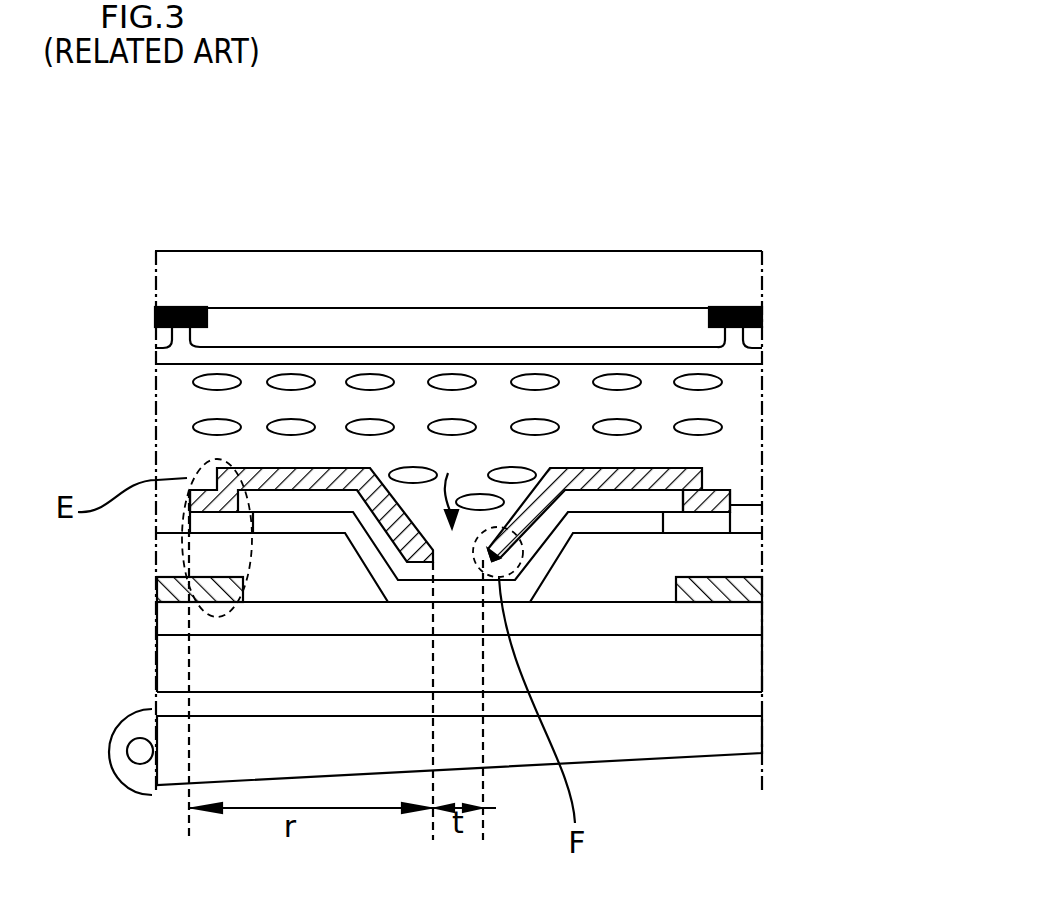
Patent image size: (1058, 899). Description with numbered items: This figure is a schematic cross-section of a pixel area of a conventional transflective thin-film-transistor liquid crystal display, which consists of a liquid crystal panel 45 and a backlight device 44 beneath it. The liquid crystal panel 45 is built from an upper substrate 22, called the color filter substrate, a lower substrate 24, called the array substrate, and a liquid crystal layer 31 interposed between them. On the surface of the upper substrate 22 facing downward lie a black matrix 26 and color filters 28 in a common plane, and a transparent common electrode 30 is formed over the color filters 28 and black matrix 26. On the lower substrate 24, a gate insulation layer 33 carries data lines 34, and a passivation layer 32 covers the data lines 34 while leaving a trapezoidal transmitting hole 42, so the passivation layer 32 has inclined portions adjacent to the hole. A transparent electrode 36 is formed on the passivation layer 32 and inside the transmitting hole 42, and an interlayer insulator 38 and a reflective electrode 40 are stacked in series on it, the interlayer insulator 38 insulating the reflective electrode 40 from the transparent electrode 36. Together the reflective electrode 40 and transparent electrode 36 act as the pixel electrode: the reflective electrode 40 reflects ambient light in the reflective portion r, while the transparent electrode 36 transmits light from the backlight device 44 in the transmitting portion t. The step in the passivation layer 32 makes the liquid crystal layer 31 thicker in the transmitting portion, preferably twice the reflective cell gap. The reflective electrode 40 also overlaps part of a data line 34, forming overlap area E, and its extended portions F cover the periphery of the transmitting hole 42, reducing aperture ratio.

The upper substrate 22 is at (458, 279).
The lower substrate 24 is at (458, 700).
The black matrix 26 is at (183, 306).
The color filters 28 is at (262, 330).
The transparent common electrode 30 is at (168, 356).
The liquid crystal layer 31 is at (143, 365).
The passivation layer 32 is at (170, 553).
The gate insulation layer 33 is at (750, 622).
The data lines 34 is at (163, 593).
The transparent electrode 36 is at (655, 523).
The interlayer insulator 38 is at (703, 473).
The reflective electrode 40 is at (660, 468).
The transmitting hole 42 is at (452, 483).
The backlight device 44 is at (748, 735).
The liquid crystal panel 45 is at (645, 206).